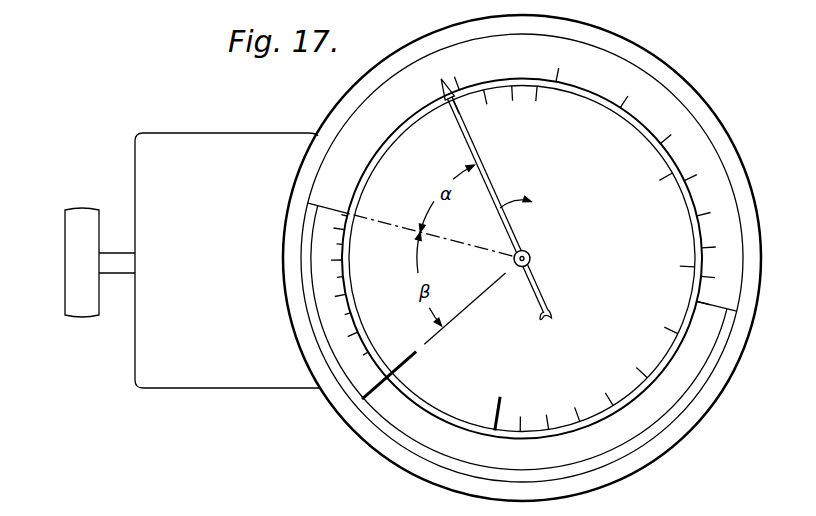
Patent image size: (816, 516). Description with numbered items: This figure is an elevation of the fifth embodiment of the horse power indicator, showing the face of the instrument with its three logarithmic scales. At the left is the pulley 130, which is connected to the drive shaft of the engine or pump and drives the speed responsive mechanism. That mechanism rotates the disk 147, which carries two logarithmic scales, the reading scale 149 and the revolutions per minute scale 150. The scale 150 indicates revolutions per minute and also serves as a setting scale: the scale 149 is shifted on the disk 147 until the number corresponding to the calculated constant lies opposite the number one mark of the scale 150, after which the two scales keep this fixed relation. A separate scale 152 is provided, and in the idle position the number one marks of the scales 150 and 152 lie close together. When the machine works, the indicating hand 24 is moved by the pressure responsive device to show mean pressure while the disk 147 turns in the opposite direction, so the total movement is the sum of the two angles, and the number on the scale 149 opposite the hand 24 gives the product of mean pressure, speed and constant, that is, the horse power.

The indicating hand 24 is at (537, 277).
The pulley 130 is at (83, 318).
The disk 147 is at (469, 372).
The reading scale 149 is at (522, 243).
The revolutions per minute scale 150 is at (357, 377).
The separate scale 152 is at (611, 59).